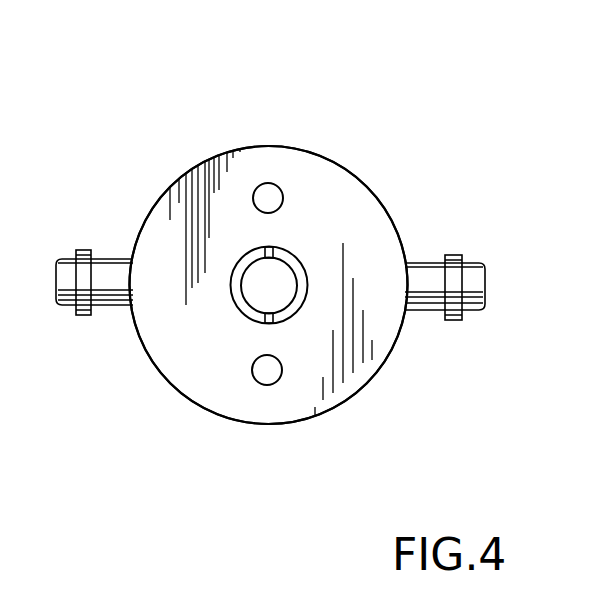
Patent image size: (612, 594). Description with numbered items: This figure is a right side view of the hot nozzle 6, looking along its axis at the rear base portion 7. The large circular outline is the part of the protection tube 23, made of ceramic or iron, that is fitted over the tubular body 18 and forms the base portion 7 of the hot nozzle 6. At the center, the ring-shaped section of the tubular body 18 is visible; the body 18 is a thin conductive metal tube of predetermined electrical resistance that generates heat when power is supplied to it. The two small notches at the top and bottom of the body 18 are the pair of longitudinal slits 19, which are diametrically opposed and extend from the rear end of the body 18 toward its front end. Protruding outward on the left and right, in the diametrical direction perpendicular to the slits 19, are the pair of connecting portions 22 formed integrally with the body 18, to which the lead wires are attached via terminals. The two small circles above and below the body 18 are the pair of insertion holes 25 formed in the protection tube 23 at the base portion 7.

The hot nozzle 6 is at (371, 153).
The base portion 7 is at (363, 391).
The tubular body 18 is at (298, 295).
The longitudinal slits 19 is at (272, 247).
The connecting portions 22 is at (108, 270).
The protection tube 23 is at (223, 400).
The insertion holes 25 is at (268, 200).